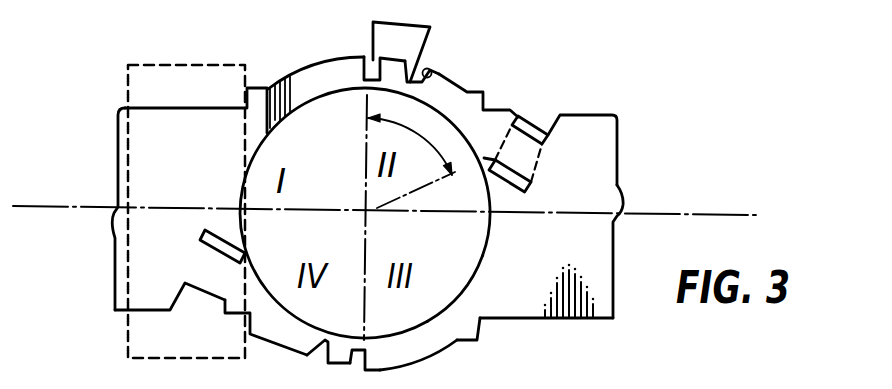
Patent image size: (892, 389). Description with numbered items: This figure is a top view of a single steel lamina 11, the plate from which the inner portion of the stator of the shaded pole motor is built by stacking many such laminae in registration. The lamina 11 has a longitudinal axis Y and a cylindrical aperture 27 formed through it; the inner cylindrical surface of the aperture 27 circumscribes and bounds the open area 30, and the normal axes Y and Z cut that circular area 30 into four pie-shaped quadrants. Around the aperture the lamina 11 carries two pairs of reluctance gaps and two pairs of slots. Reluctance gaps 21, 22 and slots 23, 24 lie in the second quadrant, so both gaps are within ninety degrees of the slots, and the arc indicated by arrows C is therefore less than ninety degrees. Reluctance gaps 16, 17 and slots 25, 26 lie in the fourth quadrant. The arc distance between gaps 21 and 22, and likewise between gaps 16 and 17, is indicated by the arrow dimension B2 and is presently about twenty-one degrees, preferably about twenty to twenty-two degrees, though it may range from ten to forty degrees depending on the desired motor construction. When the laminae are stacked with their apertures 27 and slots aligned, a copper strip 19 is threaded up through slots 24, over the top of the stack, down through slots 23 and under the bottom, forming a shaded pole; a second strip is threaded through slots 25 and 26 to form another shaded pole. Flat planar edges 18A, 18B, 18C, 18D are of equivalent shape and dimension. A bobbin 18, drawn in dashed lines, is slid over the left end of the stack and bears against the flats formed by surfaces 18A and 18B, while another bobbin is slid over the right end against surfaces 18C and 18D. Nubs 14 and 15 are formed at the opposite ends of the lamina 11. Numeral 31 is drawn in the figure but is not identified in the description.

The steel lamina 11 is at (573, 50).
The nub 14 is at (110, 224).
The nub 15 is at (625, 207).
The reluctance gap 16 is at (368, 362).
The reluctance gap 17 is at (312, 352).
The bobbin 18 is at (181, 64).
The flat planar edge 18A is at (247, 96).
The flat planar edge 18B is at (247, 323).
The flat planar edge 18C is at (486, 322).
The flat planar edge 18D is at (490, 110).
The copper strip 19 is at (535, 117).
The reluctance gap 21 is at (362, 72).
The reluctance gap 22 is at (428, 70).
The slot 23 is at (545, 140).
The slot 24 is at (527, 186).
The slot 25 is at (184, 285).
The slot 26 is at (200, 236).
The cylindrical aperture 27 is at (483, 252).
The open area 30 is at (447, 280).
The lower right chamber 31 is at (594, 320).
The pin angle B2 is at (401, 41).
The arrows C is at (410, 144).
The axis Z is at (362, 130).
The longitudinal axis Y is at (725, 213).